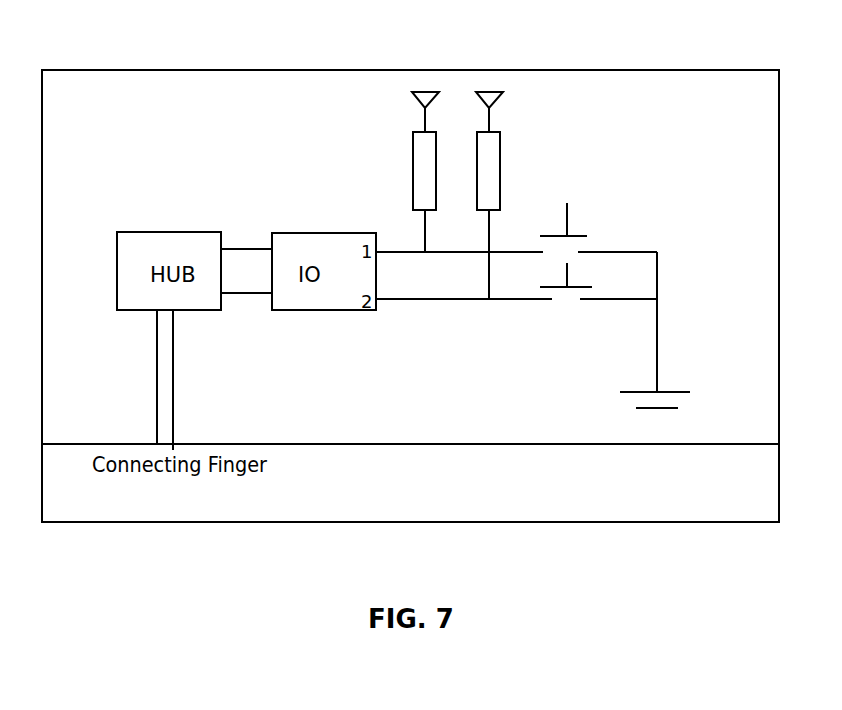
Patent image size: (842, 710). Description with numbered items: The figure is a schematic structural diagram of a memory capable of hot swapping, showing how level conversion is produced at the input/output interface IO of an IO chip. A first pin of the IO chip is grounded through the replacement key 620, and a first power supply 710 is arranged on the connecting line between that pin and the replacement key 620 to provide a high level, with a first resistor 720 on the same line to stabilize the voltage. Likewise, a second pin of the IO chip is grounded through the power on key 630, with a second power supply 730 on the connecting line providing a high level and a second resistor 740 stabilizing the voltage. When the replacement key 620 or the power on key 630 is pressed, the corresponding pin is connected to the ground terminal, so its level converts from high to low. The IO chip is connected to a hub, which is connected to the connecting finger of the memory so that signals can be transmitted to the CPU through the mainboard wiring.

The first power supply 710 is at (425, 92).
The first resistor 720 is at (433, 132).
The second power supply 730 is at (489, 92).
The second resistor 740 is at (497, 132).
The replacement key 620 is at (572, 233).
The power on key 630 is at (588, 287).